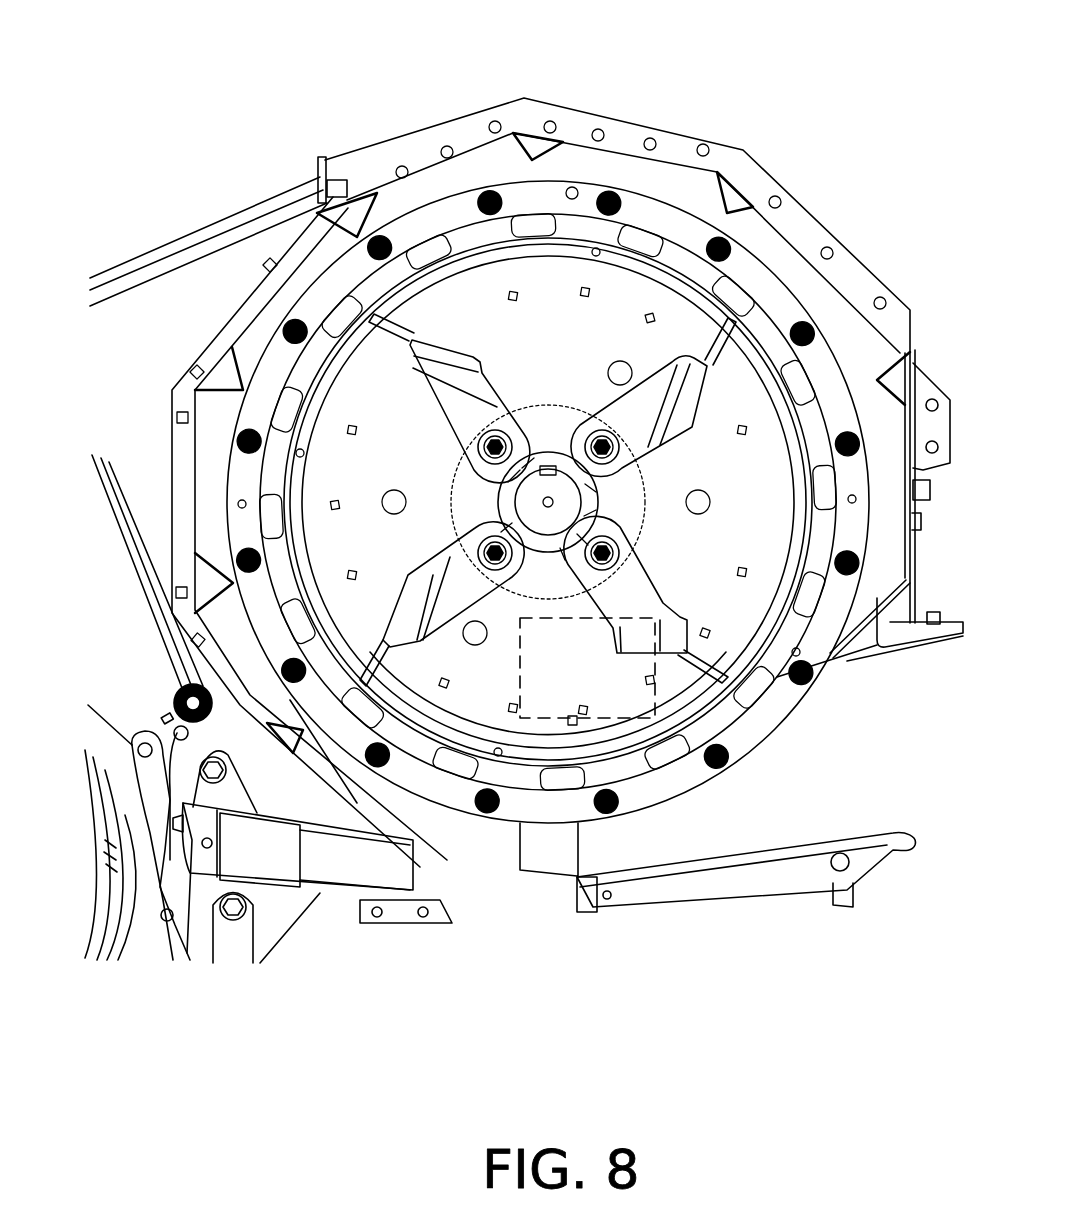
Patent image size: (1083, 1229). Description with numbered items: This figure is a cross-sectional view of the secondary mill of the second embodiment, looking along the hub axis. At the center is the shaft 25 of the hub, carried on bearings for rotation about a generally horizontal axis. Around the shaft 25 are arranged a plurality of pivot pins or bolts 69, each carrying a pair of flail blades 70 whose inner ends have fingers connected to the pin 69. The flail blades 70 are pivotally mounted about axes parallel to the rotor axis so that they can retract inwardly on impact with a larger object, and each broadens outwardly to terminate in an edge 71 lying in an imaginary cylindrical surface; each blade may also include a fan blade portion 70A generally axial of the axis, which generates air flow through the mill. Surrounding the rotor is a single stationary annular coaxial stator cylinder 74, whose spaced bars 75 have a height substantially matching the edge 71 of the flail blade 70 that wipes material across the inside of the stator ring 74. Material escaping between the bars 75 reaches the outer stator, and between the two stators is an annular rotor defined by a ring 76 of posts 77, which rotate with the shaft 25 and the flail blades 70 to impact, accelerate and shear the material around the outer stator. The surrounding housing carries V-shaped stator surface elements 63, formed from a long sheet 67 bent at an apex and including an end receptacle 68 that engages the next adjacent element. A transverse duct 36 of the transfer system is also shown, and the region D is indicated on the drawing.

The shaft 25 is at (563, 505).
The transverse duct 36 is at (431, 162).
The stator surface element 63 is at (537, 157).
The long sheet 67 is at (574, 723).
The end receptacle 68 is at (546, 384).
The pivot pin 69 is at (478, 452).
The flail blade 70 is at (432, 402).
The fan blade portion 70A is at (700, 406).
The edge 71 is at (366, 320).
The stator cylinder 74 is at (548, 621).
The bars 75 is at (467, 765).
The ring 76 is at (332, 296).
The posts 77 is at (282, 330).
The direction region D is at (714, 592).